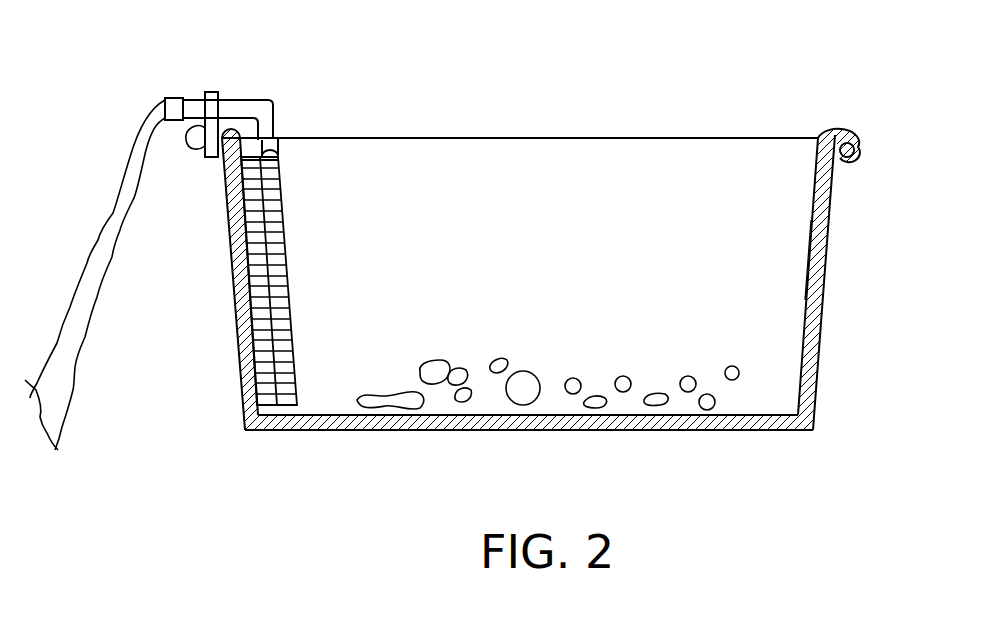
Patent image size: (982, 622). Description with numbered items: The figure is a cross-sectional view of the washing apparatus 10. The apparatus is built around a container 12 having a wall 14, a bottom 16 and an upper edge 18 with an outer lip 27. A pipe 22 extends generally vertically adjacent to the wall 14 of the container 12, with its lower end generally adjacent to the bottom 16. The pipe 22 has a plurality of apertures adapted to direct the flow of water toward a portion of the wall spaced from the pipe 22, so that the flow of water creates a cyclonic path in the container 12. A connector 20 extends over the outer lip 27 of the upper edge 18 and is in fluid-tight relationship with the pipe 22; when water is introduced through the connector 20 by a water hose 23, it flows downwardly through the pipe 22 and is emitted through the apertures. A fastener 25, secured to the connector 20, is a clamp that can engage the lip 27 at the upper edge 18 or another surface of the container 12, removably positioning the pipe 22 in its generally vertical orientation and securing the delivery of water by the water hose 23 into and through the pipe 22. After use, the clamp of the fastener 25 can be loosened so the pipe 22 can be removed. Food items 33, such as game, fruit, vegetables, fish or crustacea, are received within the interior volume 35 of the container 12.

The apparatus 10 is at (883, 283).
The container 12 is at (822, 338).
The wall 14 is at (227, 218).
The bottom 16 is at (722, 428).
The upper edge 18 is at (505, 137).
The connector 20 is at (172, 100).
The pipe 22 is at (285, 247).
The water hose 23 is at (85, 283).
The fastener 25 is at (211, 92).
The outer lip 27 is at (188, 154).
The food items 33 is at (538, 375).
The interior volume 35 is at (800, 240).